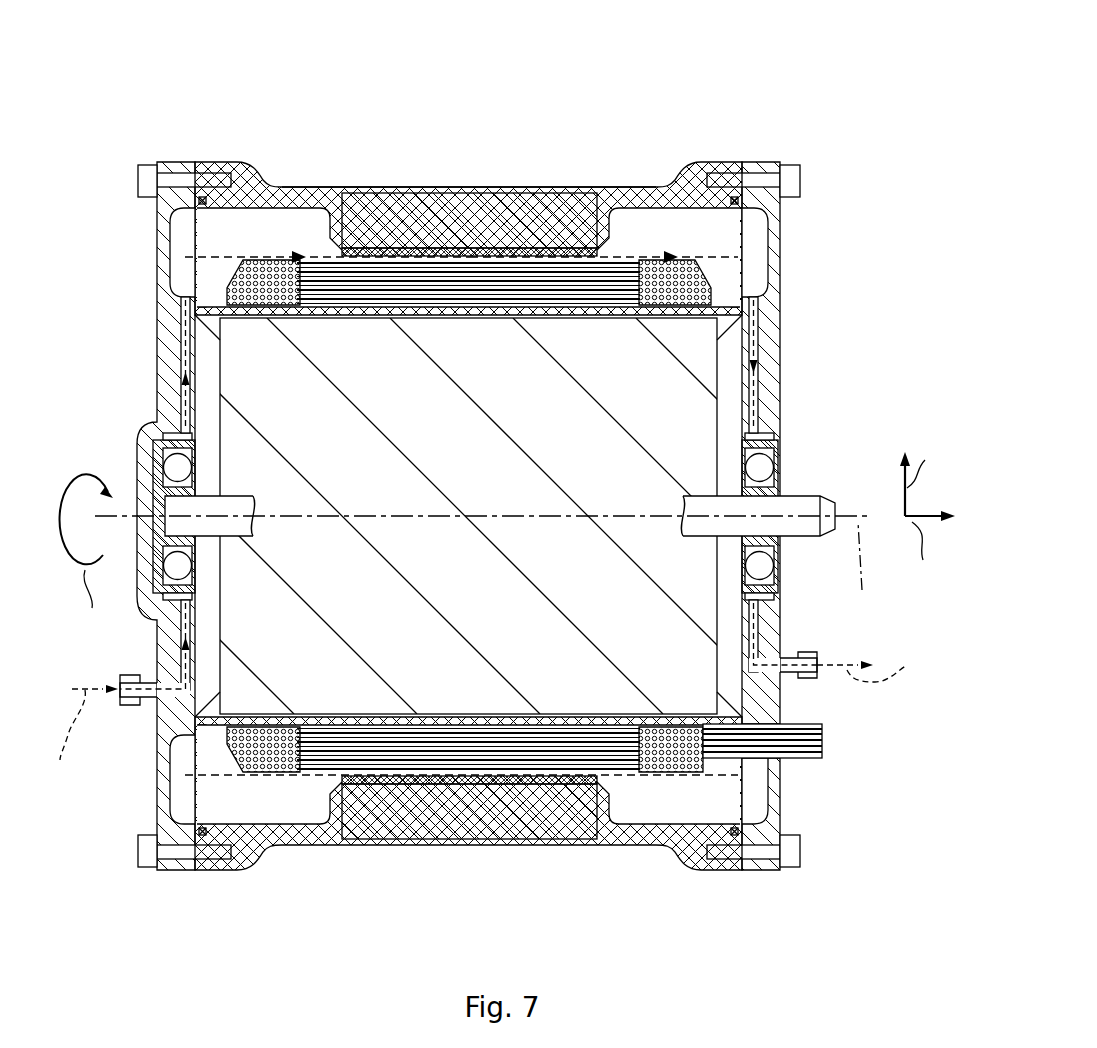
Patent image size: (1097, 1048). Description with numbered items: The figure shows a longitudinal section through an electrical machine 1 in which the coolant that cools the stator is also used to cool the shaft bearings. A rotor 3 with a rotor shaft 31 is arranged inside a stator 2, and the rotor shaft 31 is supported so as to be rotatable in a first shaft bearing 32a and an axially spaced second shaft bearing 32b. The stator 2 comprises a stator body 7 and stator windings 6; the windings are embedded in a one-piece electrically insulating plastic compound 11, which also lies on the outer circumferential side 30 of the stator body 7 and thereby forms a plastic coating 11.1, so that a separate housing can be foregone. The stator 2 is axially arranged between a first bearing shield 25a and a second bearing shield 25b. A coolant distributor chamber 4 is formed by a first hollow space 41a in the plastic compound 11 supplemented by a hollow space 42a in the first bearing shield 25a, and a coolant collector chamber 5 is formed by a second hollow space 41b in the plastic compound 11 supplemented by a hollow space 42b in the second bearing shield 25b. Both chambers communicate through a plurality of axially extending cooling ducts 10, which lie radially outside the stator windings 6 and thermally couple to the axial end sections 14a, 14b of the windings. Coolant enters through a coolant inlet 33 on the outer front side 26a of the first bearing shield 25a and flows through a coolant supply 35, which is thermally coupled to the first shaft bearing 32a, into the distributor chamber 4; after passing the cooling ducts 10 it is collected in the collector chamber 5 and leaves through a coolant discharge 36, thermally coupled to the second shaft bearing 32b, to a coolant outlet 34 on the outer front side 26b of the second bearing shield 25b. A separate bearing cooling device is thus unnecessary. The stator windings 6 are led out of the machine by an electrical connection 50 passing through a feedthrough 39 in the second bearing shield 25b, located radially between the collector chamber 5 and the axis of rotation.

The electrical machine 1 is at (896, 150).
The stator 2 is at (553, 183).
The rotor 3 is at (449, 479).
The coolant distributor chamber 4 is at (223, 244).
The coolant collector chamber 5 is at (703, 244).
The stator windings 6 is at (610, 316).
The stator body 7 is at (459, 183).
The cooling ducts 10 is at (366, 249).
The plastic compound 11 is at (633, 183).
The plastic coating 11.1 is at (510, 187).
The first axial end section of the stator windings 14a is at (250, 285).
The second axial end section of the stator windings 14b is at (700, 285).
The first bearing shield 25a is at (152, 350).
The second bearing shield 25b is at (786, 350).
The outer front side of the first bearing shield 26a is at (163, 385).
The outer front side of the second bearing shield 26b is at (778, 385).
The outer circumferential side of the stator body 30 is at (434, 186).
The rotor shaft 31 is at (803, 536).
The first shaft bearing 32a is at (163, 450).
The second shaft bearing 32b is at (778, 450).
The coolant inlet 33 is at (131, 702).
The coolant outlet 34 is at (806, 678).
The coolant supply 35 is at (192, 320).
The coolant discharge 36 is at (745, 320).
The feedthrough 39 is at (800, 758).
The first hollow space 41a is at (270, 232).
The second hollow space 41b is at (682, 222).
The hollow space in the first bearing shield 42a is at (185, 248).
The hollow space in the second bearing shield 42b is at (760, 248).
The electrical connection 50 is at (823, 741).